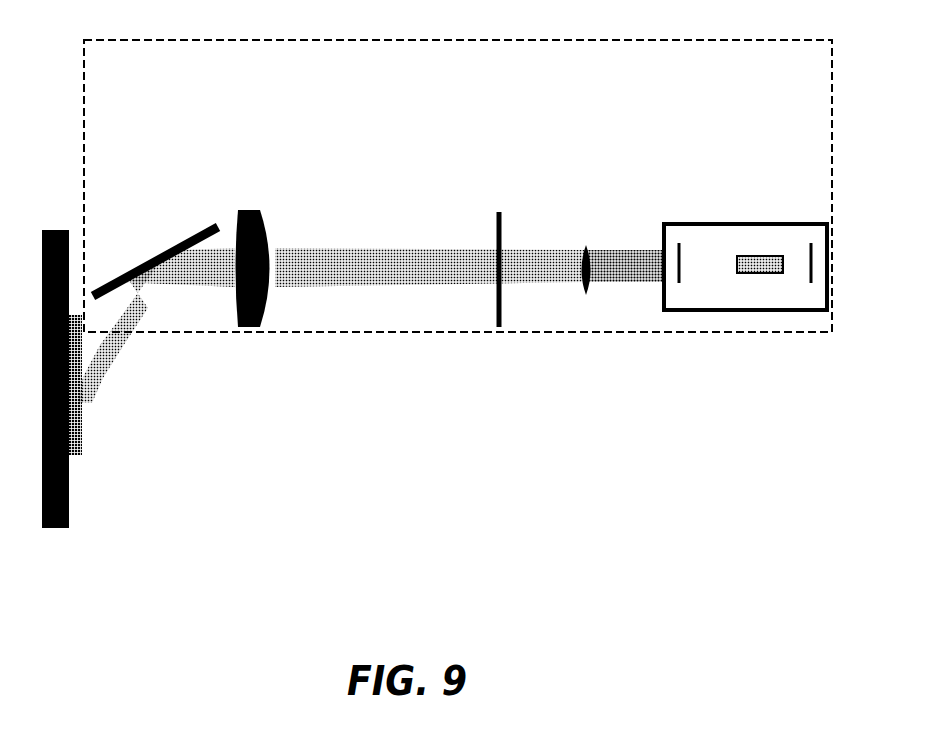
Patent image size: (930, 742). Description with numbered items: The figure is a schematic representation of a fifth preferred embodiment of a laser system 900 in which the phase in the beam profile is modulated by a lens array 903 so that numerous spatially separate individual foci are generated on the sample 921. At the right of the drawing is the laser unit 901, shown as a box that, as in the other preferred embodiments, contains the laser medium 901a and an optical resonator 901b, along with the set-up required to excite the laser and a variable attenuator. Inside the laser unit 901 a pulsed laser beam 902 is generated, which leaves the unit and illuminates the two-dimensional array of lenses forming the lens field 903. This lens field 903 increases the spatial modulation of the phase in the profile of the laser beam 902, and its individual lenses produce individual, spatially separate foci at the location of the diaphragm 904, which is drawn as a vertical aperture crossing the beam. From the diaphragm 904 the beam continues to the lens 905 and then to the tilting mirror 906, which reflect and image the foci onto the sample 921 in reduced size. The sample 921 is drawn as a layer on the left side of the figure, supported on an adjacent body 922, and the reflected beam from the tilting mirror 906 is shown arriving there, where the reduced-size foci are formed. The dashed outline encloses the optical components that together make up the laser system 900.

The laser system 900 is at (533, 345).
The laser unit 901 is at (790, 198).
The laser medium 901a is at (735, 239).
The optical resonator 901b is at (797, 295).
The laser beam 902 is at (633, 228).
The lens array 903 is at (585, 221).
The diaphragm 904 is at (499, 192).
The lens 905 is at (250, 192).
The tilting mirror 906 is at (150, 230).
The sample 921 is at (100, 438).
The substrate 922 is at (80, 523).